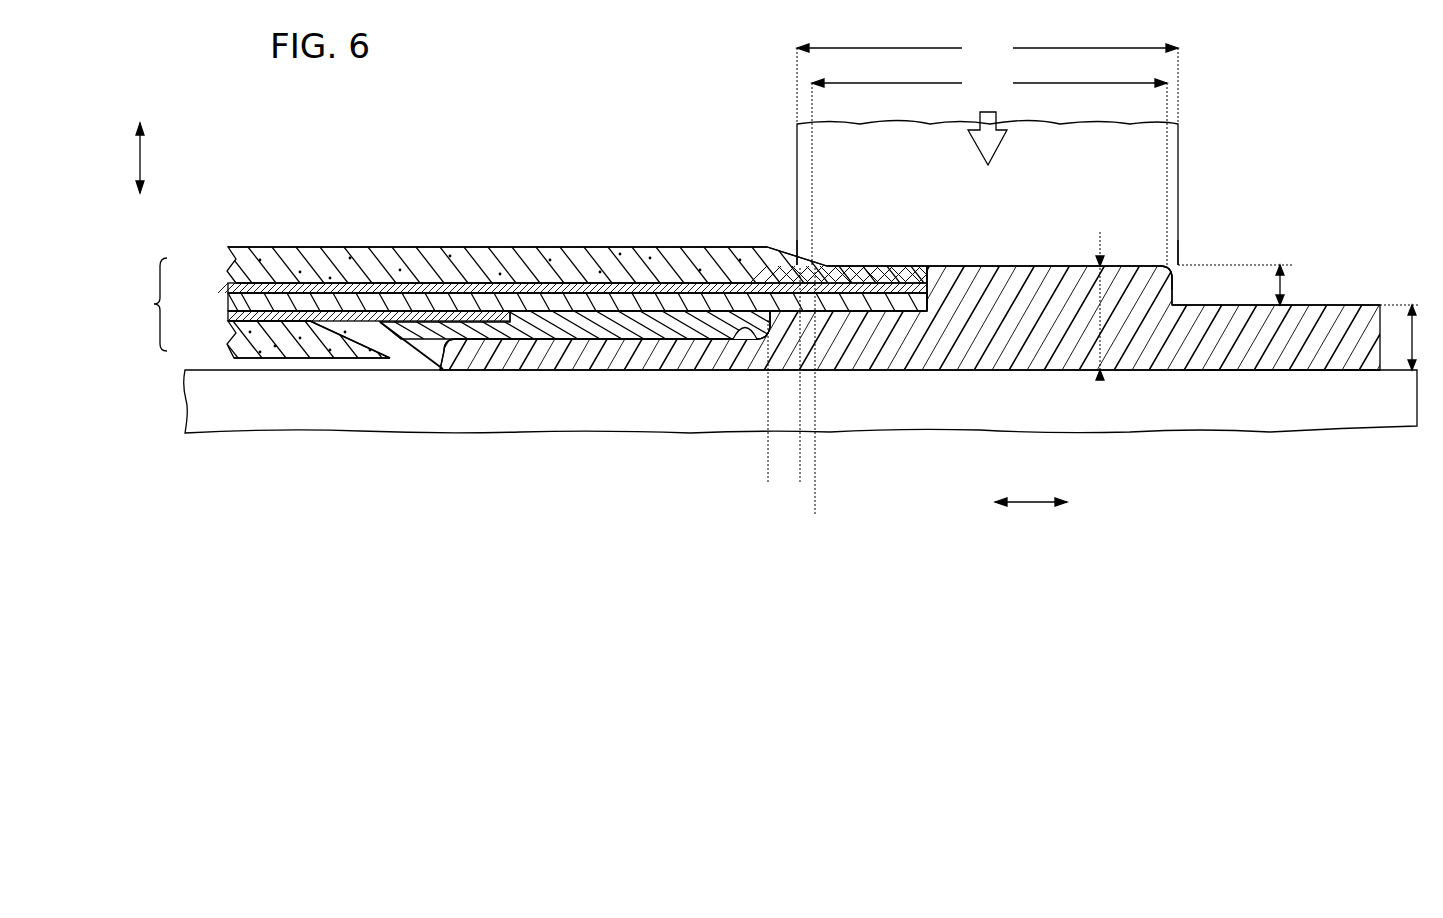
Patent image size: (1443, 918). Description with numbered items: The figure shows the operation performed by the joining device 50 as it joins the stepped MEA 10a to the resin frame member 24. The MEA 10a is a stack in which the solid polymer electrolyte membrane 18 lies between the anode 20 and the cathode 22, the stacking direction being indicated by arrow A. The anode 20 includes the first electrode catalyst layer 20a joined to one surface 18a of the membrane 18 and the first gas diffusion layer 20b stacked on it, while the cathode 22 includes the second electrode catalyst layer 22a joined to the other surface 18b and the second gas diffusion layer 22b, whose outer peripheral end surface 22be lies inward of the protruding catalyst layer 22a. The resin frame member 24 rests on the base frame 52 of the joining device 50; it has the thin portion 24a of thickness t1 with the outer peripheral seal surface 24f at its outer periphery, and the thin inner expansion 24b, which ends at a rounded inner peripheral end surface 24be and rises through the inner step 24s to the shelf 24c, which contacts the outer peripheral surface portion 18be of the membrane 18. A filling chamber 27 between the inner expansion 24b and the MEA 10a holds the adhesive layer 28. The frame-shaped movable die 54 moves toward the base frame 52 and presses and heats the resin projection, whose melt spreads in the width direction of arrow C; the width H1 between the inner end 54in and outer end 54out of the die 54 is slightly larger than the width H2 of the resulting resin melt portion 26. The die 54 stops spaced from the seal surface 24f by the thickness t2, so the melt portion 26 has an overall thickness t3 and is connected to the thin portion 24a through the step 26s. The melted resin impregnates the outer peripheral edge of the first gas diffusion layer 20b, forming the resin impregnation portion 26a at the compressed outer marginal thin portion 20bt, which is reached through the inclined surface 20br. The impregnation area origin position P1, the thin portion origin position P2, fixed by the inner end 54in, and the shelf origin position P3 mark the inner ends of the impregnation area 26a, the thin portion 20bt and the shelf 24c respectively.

The joining device 50 is at (475, 100).
The stepped MEA 10a is at (140, 304).
The anode 20 is at (226, 277).
The first electrode catalyst layer 20a is at (276, 281).
The first gas diffusion layer 20b is at (309, 268).
The inclined surface 20br is at (772, 245).
The outer marginal thin portion 20bt is at (858, 264).
The solid polymer electrolyte membrane 18 is at (226, 302).
The one surface of the solid polymer electrolyte membrane 18a is at (418, 291).
The surface of the solid polymer electrolyte membrane 18b is at (474, 315).
The outer peripheral surface portion 18be is at (910, 312).
The cathode 22 is at (226, 322).
The second electrode catalyst layer 22a is at (265, 345).
The second gas diffusion layer 22b is at (290, 358).
The outer peripheral end surface 22be is at (370, 347).
The resin frame member 24 is at (1367, 304).
The thin portion 24a is at (1309, 355).
The inner expansion 24b is at (538, 360).
The inner peripheral end surface 24be is at (440, 365).
The inner step 24s is at (725, 340).
The shelf 24c is at (850, 320).
The outer peripheral seal surface 24f is at (1331, 303).
The resin melt portion 26 is at (1040, 264).
The resin impregnation portion 26a is at (916, 265).
The step 26s is at (1174, 289).
The filling chamber 27 is at (697, 340).
The adhesive layer 28 is at (600, 330).
The base frame 52 is at (1284, 414).
The movable die 54 is at (1172, 195).
The inner end of the movable die 54in is at (797, 262).
The outer end of the movable die 54out is at (1187, 270).
The dimension of the movable die in the width direction H1 is at (987, 79).
The dimension of the resin melt portion in the width direction H2 is at (989, 167).
The thickness of the thin portion t1 is at (1409, 337).
The thickness increase of the resin melt portion t2 is at (1244, 285).
The thickness of the resin melt portion t3 is at (1109, 294).
The impregnation area origin position P1 is at (818, 405).
The thin portion origin position P2 is at (797, 389).
The shelf origin position P3 is at (763, 415).
The direction A is at (151, 158).
The width direction C is at (1031, 488).